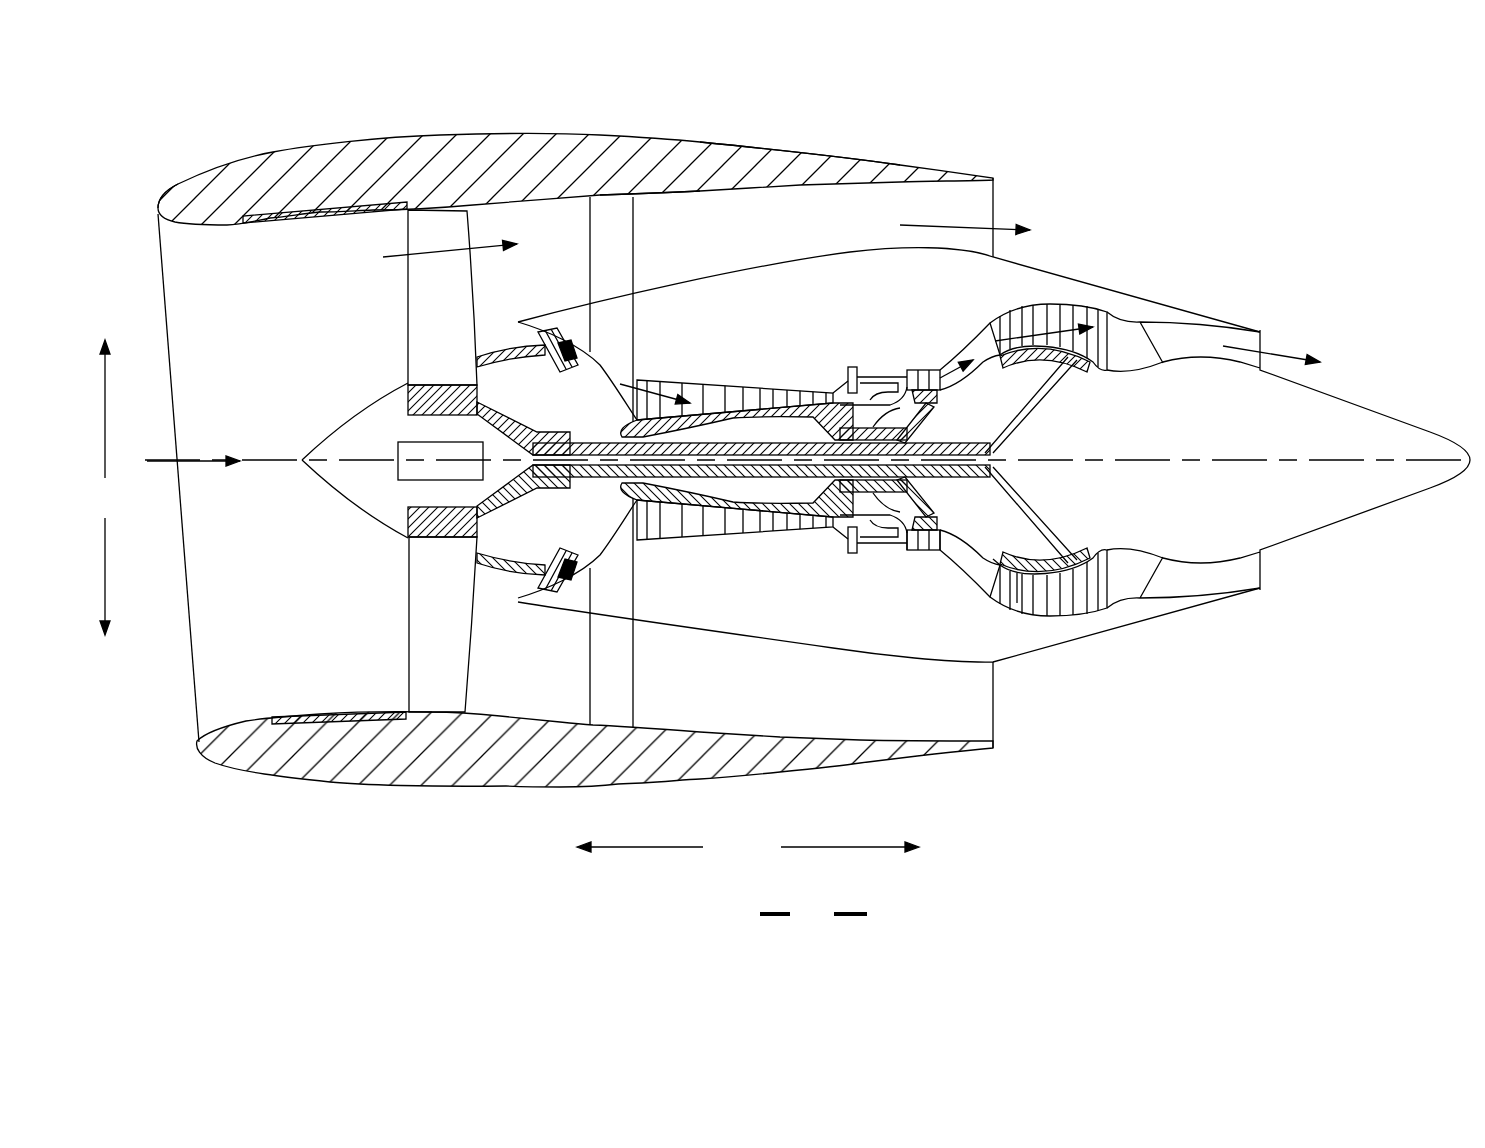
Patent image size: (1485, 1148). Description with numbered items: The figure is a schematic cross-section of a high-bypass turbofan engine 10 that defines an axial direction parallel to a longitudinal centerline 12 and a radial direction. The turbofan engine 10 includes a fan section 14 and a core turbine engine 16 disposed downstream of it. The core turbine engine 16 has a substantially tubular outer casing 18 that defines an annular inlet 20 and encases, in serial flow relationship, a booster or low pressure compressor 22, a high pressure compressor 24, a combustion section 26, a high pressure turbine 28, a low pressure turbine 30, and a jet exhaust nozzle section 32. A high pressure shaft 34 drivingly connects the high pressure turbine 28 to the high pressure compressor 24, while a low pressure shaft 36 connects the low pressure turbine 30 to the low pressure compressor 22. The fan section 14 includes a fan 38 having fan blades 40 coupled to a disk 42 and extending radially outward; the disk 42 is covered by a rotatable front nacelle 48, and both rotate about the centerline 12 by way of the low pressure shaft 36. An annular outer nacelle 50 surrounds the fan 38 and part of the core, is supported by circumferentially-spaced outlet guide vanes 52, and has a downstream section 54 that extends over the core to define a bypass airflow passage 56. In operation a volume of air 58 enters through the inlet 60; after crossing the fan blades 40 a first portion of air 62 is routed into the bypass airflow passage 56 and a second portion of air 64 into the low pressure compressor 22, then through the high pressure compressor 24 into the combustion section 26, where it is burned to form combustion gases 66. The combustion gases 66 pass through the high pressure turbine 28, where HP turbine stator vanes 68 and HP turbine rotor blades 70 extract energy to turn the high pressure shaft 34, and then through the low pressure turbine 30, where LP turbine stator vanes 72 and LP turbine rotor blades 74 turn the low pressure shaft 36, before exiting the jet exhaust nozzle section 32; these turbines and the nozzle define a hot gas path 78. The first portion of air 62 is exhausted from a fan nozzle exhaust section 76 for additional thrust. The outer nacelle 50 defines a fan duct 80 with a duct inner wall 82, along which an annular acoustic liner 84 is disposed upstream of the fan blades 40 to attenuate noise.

The turbofan engine 10 is at (1245, 208).
The longitudinal centerline 12 is at (1173, 457).
The fan section 14 is at (490, 113).
The core turbine engine 16 is at (808, 332).
The outer casing 18 is at (833, 660).
The annular inlet 20 is at (523, 588).
The low pressure compressor 22 is at (590, 560).
The high pressure compressor 24 is at (670, 540).
The combustion section 26 is at (870, 543).
The high pressure turbine 28 is at (963, 548).
The low pressure turbine 30 is at (1093, 613).
The jet exhaust nozzle section 32 is at (1262, 340).
The high pressure shaft 34 is at (929, 407).
The low pressure shaft 36 is at (585, 433).
The fan 38 is at (393, 302).
The fan blades 40 is at (407, 652).
The disk 42 is at (407, 388).
The front nacelle 48 is at (327, 432).
The outer nacelle 50 is at (480, 788).
The outlet guide vanes 52 is at (633, 220).
The downstream section 54 is at (800, 146).
The bypass airflow passage 56 is at (788, 238).
The volume of air 58 is at (190, 453).
The inlet 60 is at (194, 702).
The first portion of air 62 is at (423, 253).
The second portion of air 64 is at (500, 333).
The combustion gases 66 is at (918, 385).
The HP turbine stator vanes 68 is at (908, 553).
The HP turbine rotor blades 70 is at (923, 553).
The LP turbine stator vanes 72 is at (993, 597).
The LP turbine rotor blades 74 is at (1013, 597).
The fan nozzle exhaust section 76 is at (993, 205).
The hot gas path 78 is at (980, 338).
The fan duct 80 is at (253, 747).
The duct inner wall 82 is at (217, 243).
The acoustic liner 84 is at (318, 200).